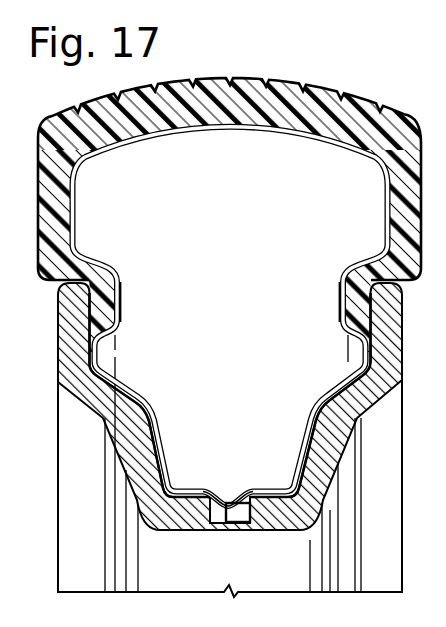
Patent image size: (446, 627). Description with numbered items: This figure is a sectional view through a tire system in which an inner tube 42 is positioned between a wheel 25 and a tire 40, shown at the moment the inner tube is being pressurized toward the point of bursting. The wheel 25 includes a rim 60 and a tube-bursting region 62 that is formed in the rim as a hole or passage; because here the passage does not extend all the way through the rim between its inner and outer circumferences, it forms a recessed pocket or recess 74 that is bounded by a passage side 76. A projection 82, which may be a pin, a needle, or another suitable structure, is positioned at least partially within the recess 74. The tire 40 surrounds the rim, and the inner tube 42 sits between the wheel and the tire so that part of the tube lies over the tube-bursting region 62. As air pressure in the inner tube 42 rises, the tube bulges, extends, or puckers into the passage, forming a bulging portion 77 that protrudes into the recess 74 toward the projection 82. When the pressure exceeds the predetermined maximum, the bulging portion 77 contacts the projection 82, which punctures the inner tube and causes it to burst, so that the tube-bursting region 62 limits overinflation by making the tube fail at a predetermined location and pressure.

The wheel 25 is at (70, 538).
The tire 40 is at (207, 84).
The inner tube 42 is at (115, 173).
The rim 60 is at (72, 328).
The tube-bursting region 62 is at (237, 543).
The recess 74 is at (246, 503).
The passage side 76 is at (215, 521).
The bulging portion 77 is at (229, 505).
The projection 82 is at (230, 523).